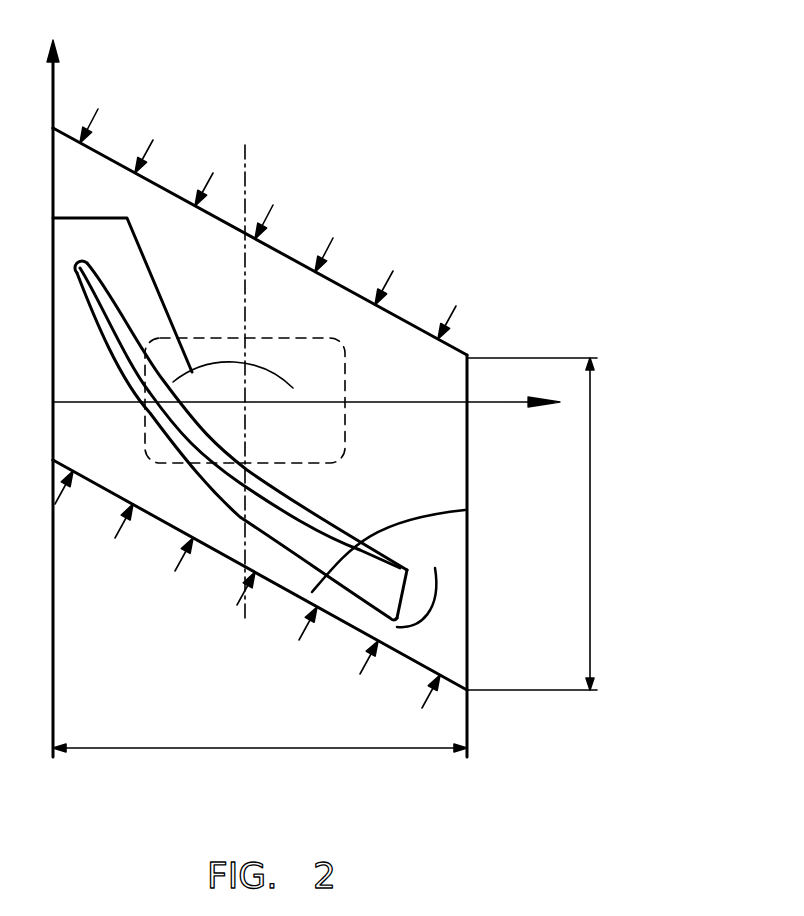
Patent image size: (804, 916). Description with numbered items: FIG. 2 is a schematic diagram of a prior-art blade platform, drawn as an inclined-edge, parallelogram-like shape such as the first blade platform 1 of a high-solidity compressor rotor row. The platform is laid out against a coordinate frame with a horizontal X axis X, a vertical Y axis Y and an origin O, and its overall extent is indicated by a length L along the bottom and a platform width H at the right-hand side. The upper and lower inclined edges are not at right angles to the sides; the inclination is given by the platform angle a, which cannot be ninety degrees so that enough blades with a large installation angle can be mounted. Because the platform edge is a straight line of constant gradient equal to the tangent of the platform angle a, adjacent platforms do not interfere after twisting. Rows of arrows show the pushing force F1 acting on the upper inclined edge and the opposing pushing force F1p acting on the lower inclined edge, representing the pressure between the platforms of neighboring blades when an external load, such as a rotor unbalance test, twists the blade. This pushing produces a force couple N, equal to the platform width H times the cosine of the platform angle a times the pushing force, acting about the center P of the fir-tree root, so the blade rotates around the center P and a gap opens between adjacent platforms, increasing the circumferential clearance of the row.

The first blade platform 1 is at (507, 58).
The force couple N is at (122, 261).
The center of the fir-tree root P is at (247, 390).
The pushing force F1 is at (268, 224).
The pushing force F1p is at (188, 604).
The X axis X is at (306, 434).
The Y axis Y is at (39, 398).
The origin O is at (131, 382).
The platform angle a is at (390, 537).
The platform width H is at (532, 524).
The length L is at (280, 748).